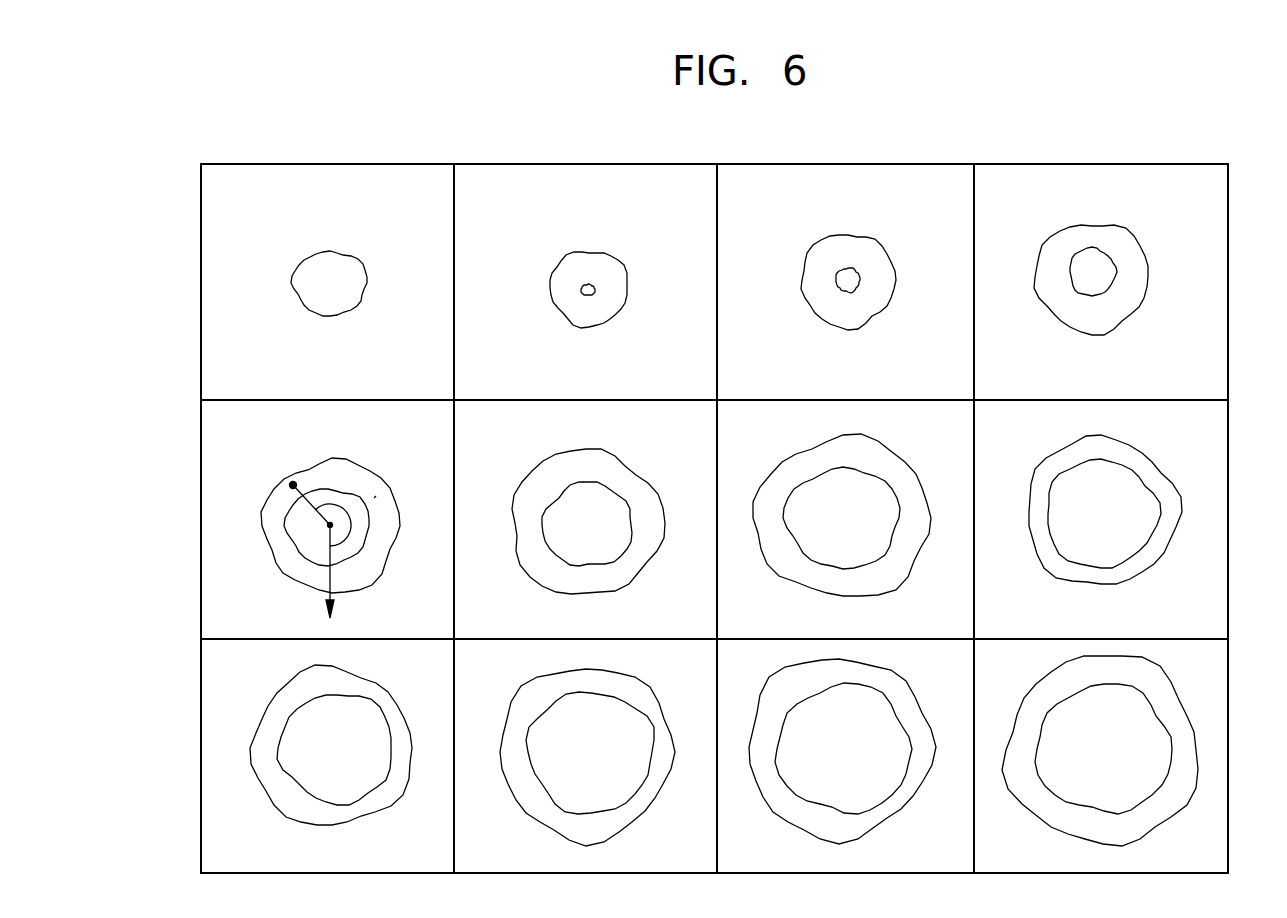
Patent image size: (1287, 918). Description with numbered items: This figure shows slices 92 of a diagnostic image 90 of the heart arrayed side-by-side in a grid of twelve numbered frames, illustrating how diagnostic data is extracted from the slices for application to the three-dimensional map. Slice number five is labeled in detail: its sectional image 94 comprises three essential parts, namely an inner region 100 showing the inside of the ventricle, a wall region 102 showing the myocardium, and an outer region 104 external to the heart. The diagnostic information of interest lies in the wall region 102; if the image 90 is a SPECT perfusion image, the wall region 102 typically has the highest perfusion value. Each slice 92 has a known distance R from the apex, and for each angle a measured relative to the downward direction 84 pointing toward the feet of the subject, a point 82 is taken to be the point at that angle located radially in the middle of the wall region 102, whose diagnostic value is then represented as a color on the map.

The image 90 is at (153, 110).
The slices 92 is at (200, 375).
The point 82 is at (293, 485).
The downward direction 84 is at (326, 592).
The sectional image 94 is at (280, 484).
The inner region 100 is at (342, 499).
The wall region 102 is at (376, 496).
The outer region 104 is at (432, 605).